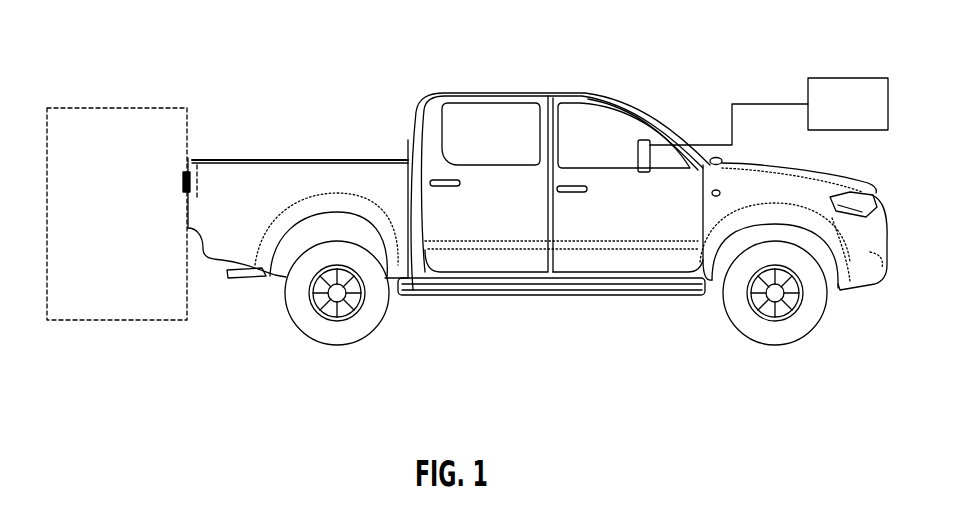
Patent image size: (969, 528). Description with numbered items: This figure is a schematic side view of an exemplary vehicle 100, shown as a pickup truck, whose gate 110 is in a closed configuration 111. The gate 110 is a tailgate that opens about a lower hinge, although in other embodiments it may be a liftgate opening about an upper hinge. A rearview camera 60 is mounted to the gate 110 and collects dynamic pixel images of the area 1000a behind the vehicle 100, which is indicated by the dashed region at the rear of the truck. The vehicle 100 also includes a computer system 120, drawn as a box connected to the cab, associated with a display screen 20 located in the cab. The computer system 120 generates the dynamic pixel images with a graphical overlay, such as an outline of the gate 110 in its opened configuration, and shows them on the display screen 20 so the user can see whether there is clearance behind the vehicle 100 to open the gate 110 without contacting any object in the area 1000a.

The area behind the vehicle 1000a is at (115, 108).
The closed configuration 111 is at (220, 74).
The gate 110 is at (190, 160).
The rearview camera 60 is at (184, 182).
The vehicle 100 is at (236, 364).
The display screen 20 is at (646, 140).
The computer system 120 is at (866, 116).